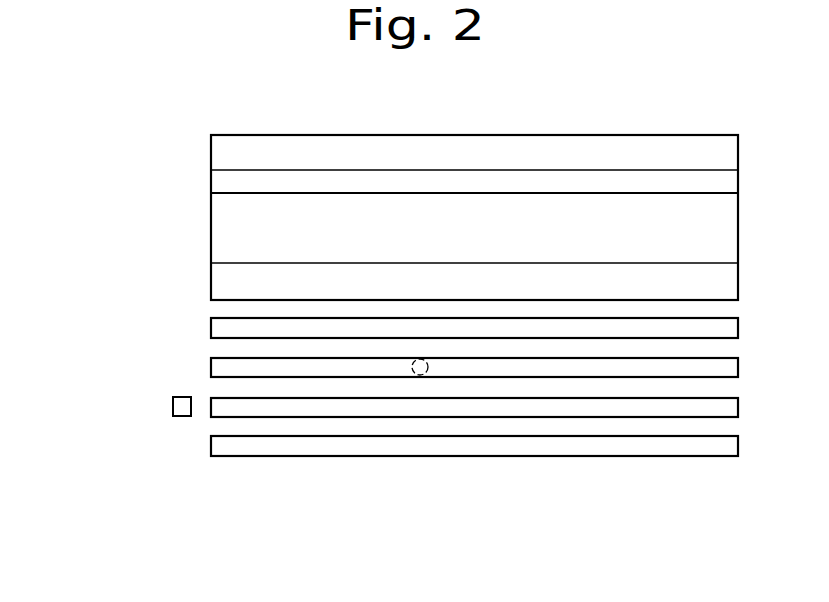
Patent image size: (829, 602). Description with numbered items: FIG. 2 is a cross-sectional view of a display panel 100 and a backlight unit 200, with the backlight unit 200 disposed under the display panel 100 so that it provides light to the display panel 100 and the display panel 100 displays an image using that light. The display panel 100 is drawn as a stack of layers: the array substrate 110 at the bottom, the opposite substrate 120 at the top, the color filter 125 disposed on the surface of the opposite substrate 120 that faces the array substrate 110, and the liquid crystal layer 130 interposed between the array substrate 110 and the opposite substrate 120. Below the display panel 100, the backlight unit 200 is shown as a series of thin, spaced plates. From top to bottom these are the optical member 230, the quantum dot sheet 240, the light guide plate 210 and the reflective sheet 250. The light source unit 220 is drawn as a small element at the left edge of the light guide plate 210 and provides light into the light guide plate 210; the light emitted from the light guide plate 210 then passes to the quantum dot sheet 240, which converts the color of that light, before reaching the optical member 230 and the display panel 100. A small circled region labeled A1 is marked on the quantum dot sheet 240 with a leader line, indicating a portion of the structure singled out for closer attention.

The display panel 100 is at (105, 145).
The array substrate 110 is at (221, 282).
The opposite substrate 120 is at (221, 152).
The color filter 125 is at (221, 182).
The liquid crystal layer 130 is at (221, 228).
The backlight unit 200 is at (105, 321).
The light guide plate 210 is at (220, 400).
The light source unit 220 is at (173, 406).
The optical member 230 is at (221, 327).
The quantum dot sheet 240 is at (221, 364).
The reflective sheet 250 is at (221, 445).
The region A1 is at (412, 370).